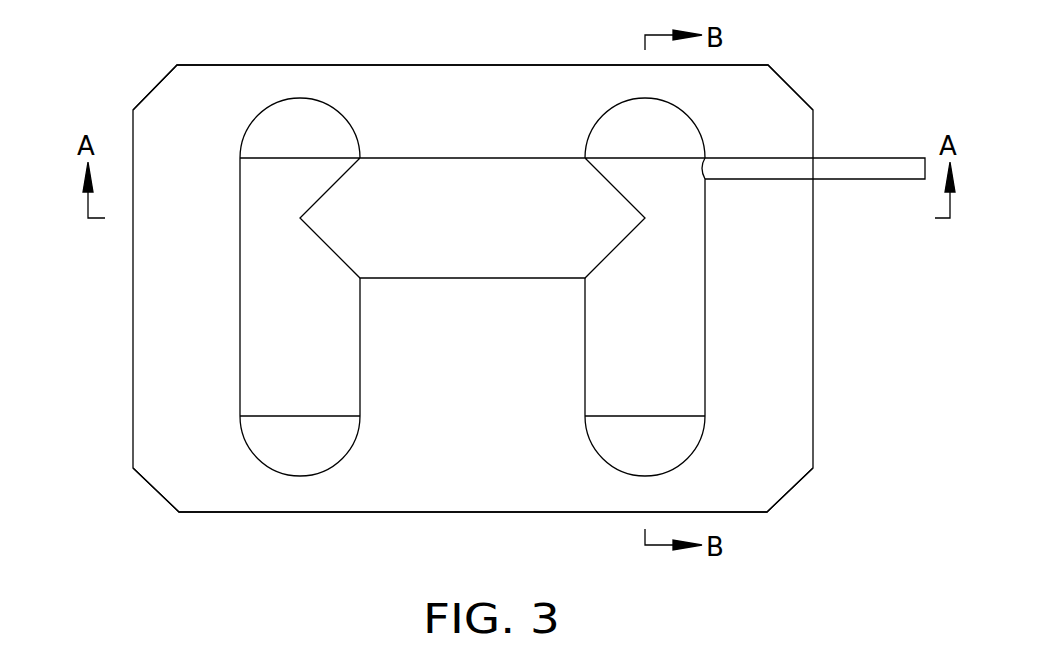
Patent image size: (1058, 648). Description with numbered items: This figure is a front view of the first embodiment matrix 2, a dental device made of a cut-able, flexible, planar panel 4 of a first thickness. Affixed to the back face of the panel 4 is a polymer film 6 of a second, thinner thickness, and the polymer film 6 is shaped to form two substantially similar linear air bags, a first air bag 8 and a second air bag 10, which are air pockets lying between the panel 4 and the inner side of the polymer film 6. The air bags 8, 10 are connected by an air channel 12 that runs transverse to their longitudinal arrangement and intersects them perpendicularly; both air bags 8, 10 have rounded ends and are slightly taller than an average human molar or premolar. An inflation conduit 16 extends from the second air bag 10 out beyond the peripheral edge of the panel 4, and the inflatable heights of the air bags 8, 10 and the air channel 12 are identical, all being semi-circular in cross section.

The matrix 2 is at (121, 360).
The panel 4 is at (153, 490).
The polymer film 6 is at (283, 498).
The first air bag 8 is at (282, 130).
The second air bag 10 is at (682, 357).
The air channel 12 is at (480, 182).
The inflation conduit 16 is at (857, 157).